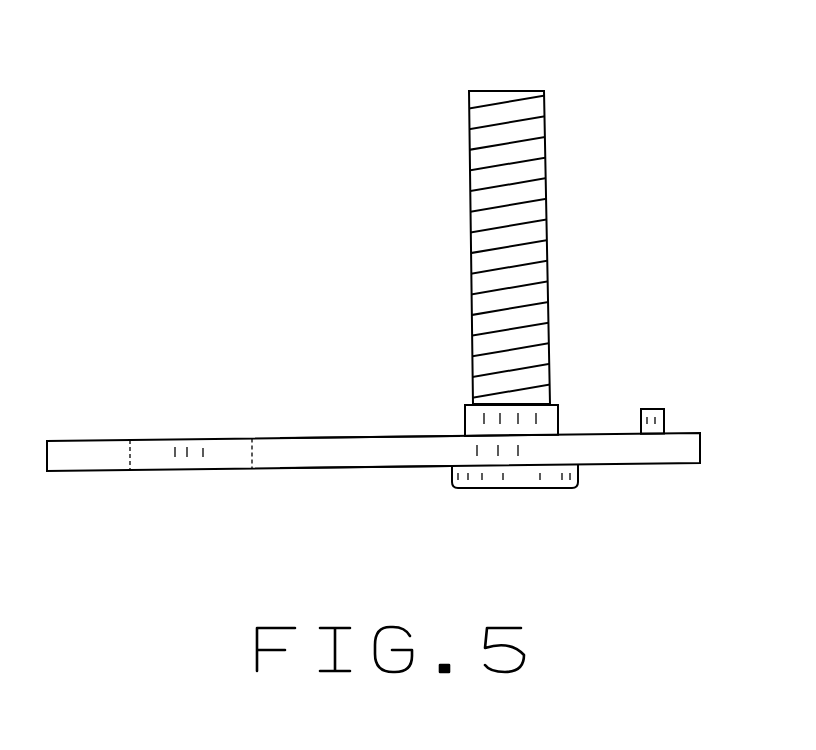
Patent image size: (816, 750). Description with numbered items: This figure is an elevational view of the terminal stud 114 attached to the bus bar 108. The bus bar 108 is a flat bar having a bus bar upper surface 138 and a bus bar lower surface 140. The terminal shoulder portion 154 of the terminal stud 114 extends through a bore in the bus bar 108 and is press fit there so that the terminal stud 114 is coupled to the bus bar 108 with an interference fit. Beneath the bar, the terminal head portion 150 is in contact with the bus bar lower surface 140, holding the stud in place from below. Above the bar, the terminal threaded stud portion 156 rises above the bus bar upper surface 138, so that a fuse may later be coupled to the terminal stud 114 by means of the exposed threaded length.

The bus bar 108 is at (308, 434).
The terminal stud 114 is at (546, 207).
The bus bar upper surface 138 is at (363, 437).
The bus bar lower surface 140 is at (348, 468).
The terminal head portion 150 is at (533, 490).
The terminal shoulder portion 154 is at (558, 418).
The terminal threaded stud portion 156 is at (527, 263).